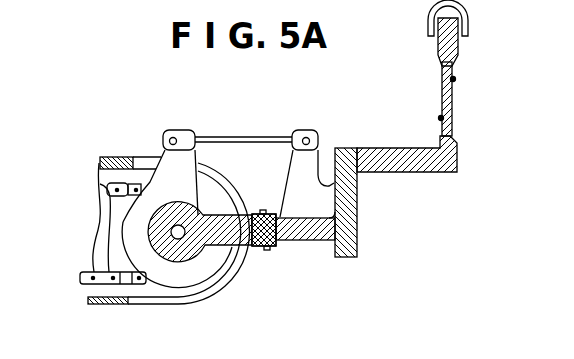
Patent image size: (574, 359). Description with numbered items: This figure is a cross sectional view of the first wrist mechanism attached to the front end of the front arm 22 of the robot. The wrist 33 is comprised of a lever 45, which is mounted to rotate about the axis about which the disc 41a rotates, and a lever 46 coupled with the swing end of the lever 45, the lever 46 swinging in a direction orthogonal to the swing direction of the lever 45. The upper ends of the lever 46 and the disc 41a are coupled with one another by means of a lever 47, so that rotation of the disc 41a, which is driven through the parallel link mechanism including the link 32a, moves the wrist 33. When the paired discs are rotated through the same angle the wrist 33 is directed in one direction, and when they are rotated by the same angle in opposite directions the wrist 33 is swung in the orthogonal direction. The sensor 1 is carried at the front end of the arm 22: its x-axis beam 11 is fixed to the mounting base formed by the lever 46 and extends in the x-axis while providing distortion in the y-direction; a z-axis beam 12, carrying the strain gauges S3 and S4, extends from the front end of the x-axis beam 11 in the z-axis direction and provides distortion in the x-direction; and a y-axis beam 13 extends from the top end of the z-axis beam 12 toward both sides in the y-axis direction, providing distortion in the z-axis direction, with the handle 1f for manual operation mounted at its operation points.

The sensor 1 is at (459, 68).
The handle 1f is at (466, 8).
The x-axis beam 11 is at (418, 165).
The z-axis beam 12 is at (453, 110).
The y-axis beam 13 is at (459, 45).
The strain gauge S3 is at (456, 79).
The strain gauge S4 is at (441, 116).
The front arm 22 is at (106, 305).
The link 32a is at (101, 192).
The wrist 33 is at (288, 240).
The disc 41a is at (177, 130).
The lever 45 is at (246, 232).
The lever 46 is at (346, 258).
The lever 47 is at (264, 137).